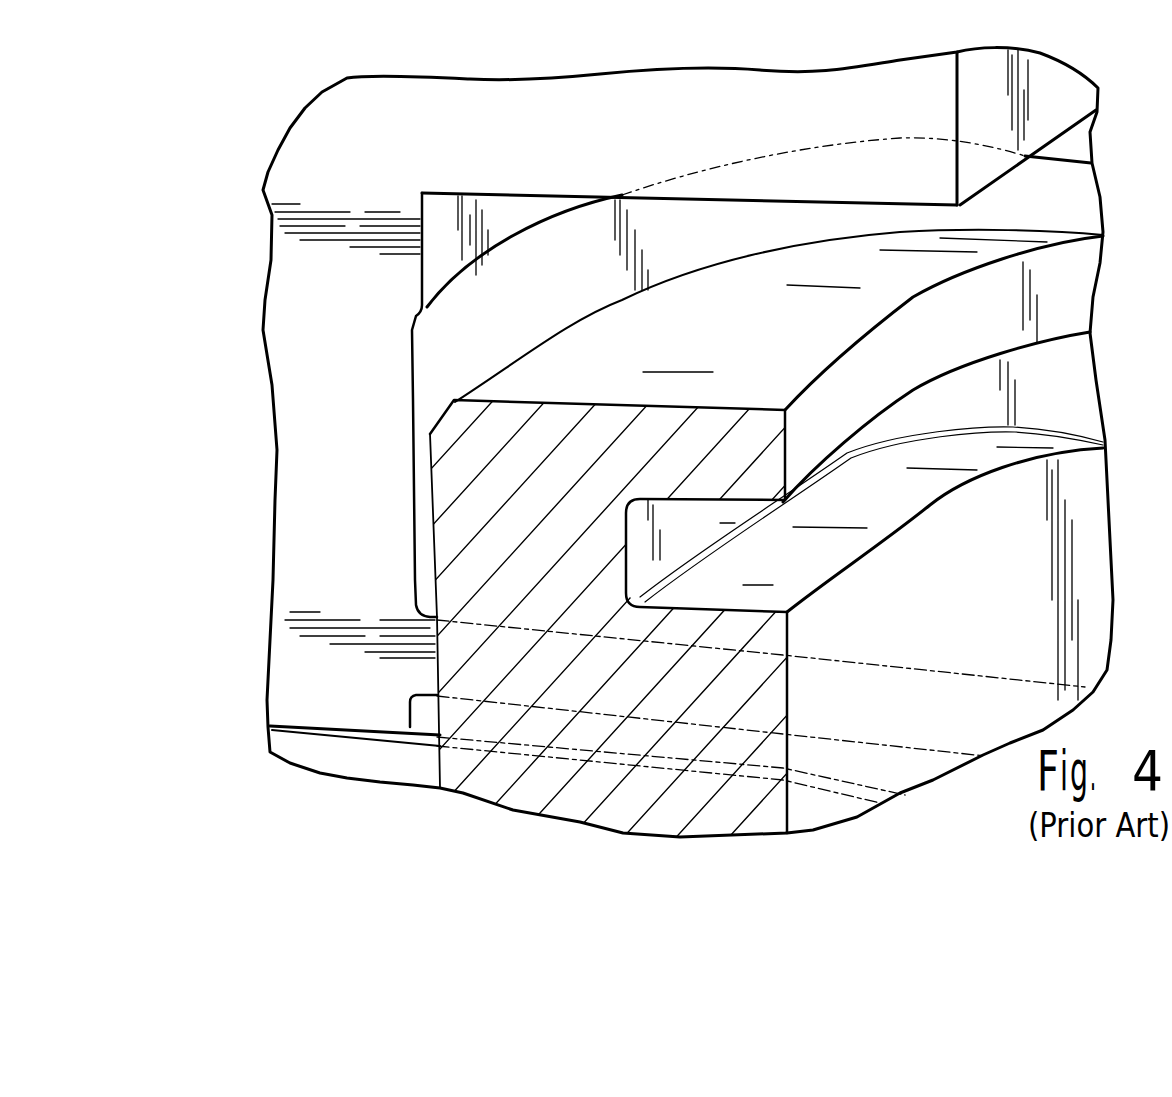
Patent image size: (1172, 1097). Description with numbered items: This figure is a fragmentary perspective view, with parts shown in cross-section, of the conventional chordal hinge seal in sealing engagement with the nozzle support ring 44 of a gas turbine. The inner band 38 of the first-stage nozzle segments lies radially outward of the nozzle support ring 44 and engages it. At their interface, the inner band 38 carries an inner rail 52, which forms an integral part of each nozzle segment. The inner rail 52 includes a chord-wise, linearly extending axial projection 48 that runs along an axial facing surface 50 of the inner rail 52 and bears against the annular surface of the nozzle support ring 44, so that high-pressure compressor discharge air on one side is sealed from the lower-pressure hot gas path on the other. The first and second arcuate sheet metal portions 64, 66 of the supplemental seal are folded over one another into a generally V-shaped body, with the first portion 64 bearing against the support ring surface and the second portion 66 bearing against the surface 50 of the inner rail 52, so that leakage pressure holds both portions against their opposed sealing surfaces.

The inner band 38 is at (338, 117).
The nozzle support ring 44 is at (530, 793).
The axial projection 48 is at (428, 672).
The axial facing surface 50 is at (428, 338).
The inner rail 52 is at (325, 447).
The first arcuate sheet metal portion 64 is at (695, 362).
The second arcuate sheet metal portion 66 is at (1005, 163).